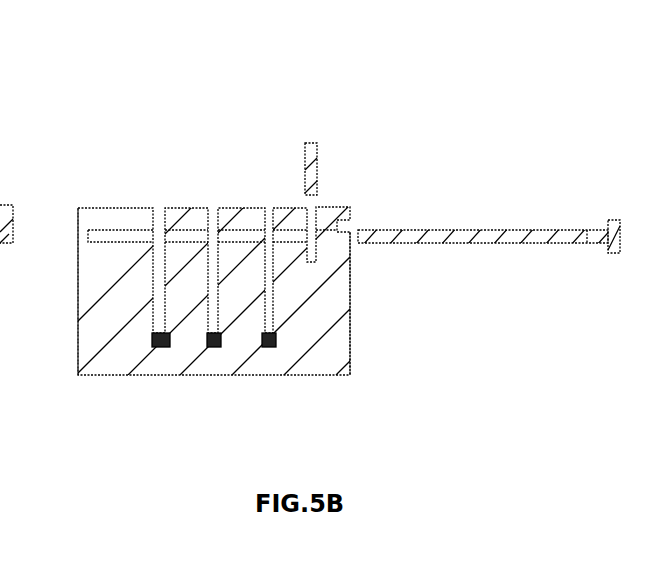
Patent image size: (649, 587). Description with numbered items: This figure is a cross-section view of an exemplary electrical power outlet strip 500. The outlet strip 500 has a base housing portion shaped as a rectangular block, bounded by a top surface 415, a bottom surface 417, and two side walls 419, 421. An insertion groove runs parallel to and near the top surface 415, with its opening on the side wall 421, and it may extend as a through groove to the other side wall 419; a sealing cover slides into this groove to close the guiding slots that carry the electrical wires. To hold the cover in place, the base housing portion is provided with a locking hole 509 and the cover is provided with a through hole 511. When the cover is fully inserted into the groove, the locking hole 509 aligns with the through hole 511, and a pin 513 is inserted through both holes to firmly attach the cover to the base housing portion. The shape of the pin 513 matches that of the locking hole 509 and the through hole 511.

The electrical power outlet strip 500 is at (310, 224).
The top surface 415 is at (118, 209).
The bottom surface 417 is at (262, 381).
The side wall 419 is at (70, 295).
The side wall 421 is at (358, 316).
The locking hole 509 is at (314, 241).
The through hole 511 is at (583, 226).
The pin 513 is at (324, 165).